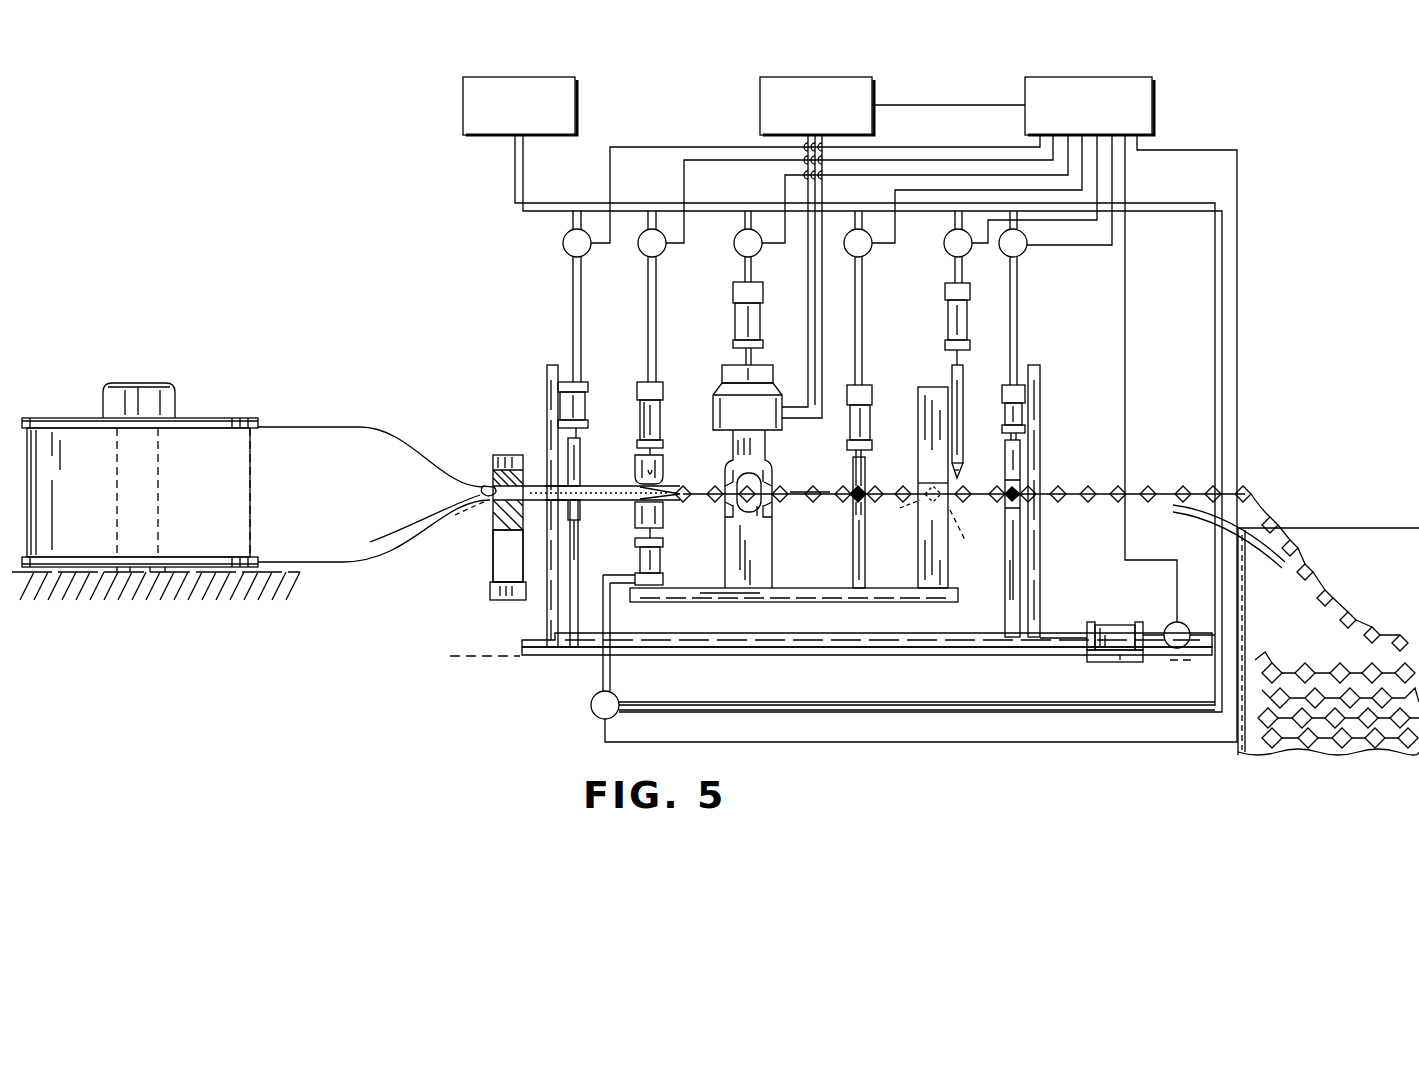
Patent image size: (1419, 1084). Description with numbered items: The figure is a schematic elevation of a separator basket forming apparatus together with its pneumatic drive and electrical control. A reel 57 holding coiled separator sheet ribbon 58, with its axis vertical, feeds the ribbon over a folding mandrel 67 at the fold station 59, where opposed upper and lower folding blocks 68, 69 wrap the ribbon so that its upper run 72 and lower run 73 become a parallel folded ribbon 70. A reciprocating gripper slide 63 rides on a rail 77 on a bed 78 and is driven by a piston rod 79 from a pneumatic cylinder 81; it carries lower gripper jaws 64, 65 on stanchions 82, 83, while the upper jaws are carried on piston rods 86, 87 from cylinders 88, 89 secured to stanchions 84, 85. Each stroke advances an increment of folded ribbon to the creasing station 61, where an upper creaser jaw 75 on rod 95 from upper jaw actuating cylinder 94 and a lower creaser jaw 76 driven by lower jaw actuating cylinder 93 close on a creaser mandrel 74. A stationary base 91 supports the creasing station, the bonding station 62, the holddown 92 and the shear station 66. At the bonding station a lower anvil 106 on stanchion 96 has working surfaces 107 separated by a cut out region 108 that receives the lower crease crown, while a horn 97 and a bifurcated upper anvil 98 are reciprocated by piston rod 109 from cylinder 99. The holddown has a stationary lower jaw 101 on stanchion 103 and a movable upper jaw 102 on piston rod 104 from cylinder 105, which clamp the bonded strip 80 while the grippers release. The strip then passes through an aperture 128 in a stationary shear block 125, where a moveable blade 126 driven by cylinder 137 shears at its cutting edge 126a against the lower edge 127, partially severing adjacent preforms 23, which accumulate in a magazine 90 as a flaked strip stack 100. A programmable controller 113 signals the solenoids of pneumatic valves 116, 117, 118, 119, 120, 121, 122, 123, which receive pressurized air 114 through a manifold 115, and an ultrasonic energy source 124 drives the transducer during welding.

The separator basket preform 23 is at (812, 491).
The reel 57 is at (205, 413).
The separator sheet ribbon 58 is at (288, 443).
The fold station 59 is at (503, 450).
The creasing station 61 is at (635, 468).
The bonding station 62 is at (716, 485).
The gripper slide 63 is at (790, 633).
The gripper jaws 64 is at (508, 556).
The gripper jaws 65 is at (1013, 493).
The shear station 66 is at (968, 460).
The folding mandrel 67 is at (472, 512).
The upper folding block 68 is at (487, 487).
The lower folding block 69 is at (497, 522).
The folded ribbon 70 is at (535, 483).
The upper run 72 is at (591, 486).
The lower run 73 is at (585, 507).
The creaser mandrel 74 is at (587, 509).
The upper creaser jaw 75 is at (665, 482).
The lower creaser jaw 76 is at (668, 525).
The rail 77 is at (527, 645).
The bed 78 is at (531, 660).
The piston rod 79 is at (1060, 640).
The bonded strip 80 is at (797, 491).
The pneumatic cylinder 81 is at (1112, 648).
The stanchion 82 is at (582, 573).
The stanchion 83 is at (1005, 583).
The stanchion 84 is at (545, 602).
The stanchion 85 is at (1040, 596).
The piston rod 86 is at (590, 428).
The piston rod 87 is at (1025, 434).
The cylinder 88 is at (587, 383).
The cylinder 89 is at (1025, 400).
The magazine 90 is at (1383, 528).
The stationary base 91 is at (707, 594).
The holddown 92 is at (855, 491).
The lower jaw actuating cylinder 93 is at (666, 562).
The upper jaw actuating cylinder 94 is at (663, 402).
The rod 95 is at (665, 442).
The stanchion 96 is at (772, 578).
The horn 97 is at (775, 398).
The upper anvil 98 is at (760, 465).
The cylinder 99 is at (733, 300).
The flaked strip stack 100 is at (1318, 670).
The stationary lower jaw 101 is at (857, 503).
The movable upper jaw 102 is at (872, 490).
The stanchion 103 is at (860, 550).
The piston rod 104 is at (872, 445).
The cylinder 105 is at (850, 405).
The lower anvil 106 is at (760, 520).
The working surfaces 107 is at (722, 504).
The cut out region 108 is at (748, 513).
The piston rod 109 is at (758, 360).
The programmable controller 113 is at (1072, 118).
The supply of pressurized air 114 is at (522, 116).
The manifold 115 is at (705, 205).
The pneumatic valve 116 is at (563, 243).
The pneumatic valve 117 is at (640, 252).
The pneumatic valve 118 is at (735, 245).
The pneumatic valve 119 is at (866, 255).
The pneumatic valve 120 is at (945, 253).
The pneumatic valve 121 is at (1028, 250).
The pneumatic valve 122 is at (1170, 625).
The pneumatic valve 123 is at (595, 712).
The ultrasonic driven energy source 124 is at (805, 116).
The stationary shear block 125 is at (918, 395).
The moveable blade 126 is at (961, 410).
The cutting edge 126a is at (958, 474).
The lower edge 127 is at (960, 530).
The aperture 128 is at (925, 503).
The cylinder 137 is at (945, 320).